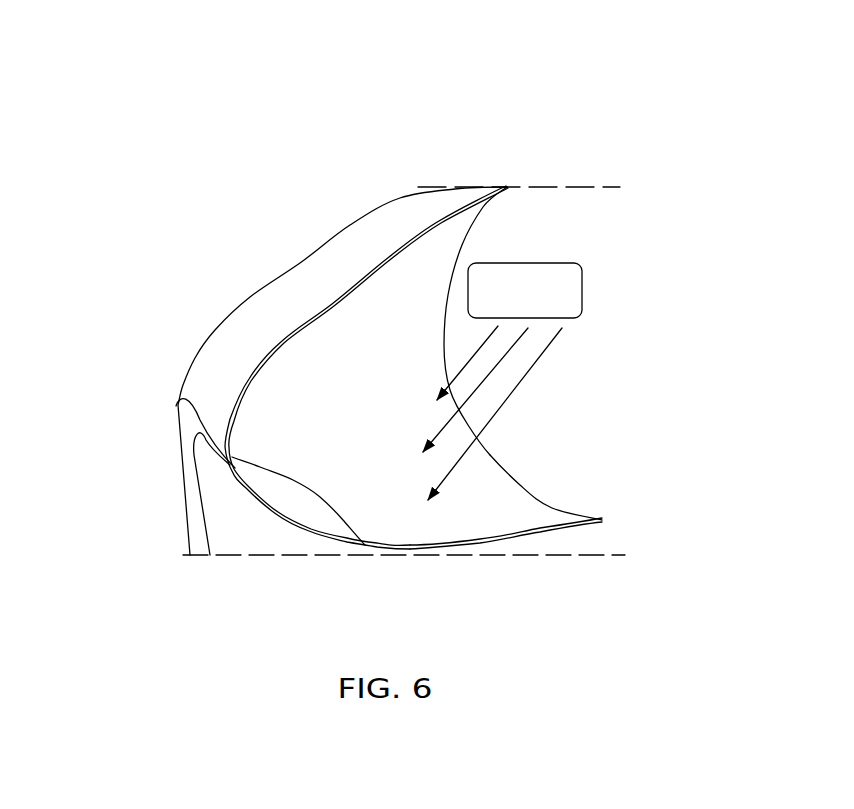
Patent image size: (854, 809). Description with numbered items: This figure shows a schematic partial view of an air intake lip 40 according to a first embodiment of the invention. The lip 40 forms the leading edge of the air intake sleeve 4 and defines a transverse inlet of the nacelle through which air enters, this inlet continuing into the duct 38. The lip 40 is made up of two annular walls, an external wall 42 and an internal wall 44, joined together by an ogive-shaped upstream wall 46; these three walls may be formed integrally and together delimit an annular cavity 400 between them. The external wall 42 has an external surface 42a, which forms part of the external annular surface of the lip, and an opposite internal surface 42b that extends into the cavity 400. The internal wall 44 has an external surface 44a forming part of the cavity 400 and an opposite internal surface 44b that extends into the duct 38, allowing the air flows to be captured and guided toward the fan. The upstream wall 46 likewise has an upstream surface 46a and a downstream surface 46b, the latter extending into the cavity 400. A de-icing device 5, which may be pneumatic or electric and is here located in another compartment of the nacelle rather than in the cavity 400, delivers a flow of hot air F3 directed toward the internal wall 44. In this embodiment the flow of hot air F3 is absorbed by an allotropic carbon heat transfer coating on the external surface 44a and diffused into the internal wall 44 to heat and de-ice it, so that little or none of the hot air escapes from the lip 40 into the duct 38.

The air intake sleeve 4 is at (298, 120).
The air intake lip 40 is at (350, 247).
The external wall 42 is at (443, 213).
The external surface 42a is at (465, 200).
The internal surface 42b is at (462, 227).
The internal wall 44 is at (585, 533).
The external surface 44a is at (538, 513).
The internal surface 44b is at (535, 537).
The upstream wall 46 is at (198, 415).
The upstream surface 46a is at (207, 368).
The downstream surface 46b is at (245, 463).
The annular cavity 400 is at (322, 380).
The duct 38 is at (436, 622).
The de-icing device 5 is at (522, 381).
The flow of hot air F3 is at (507, 402).